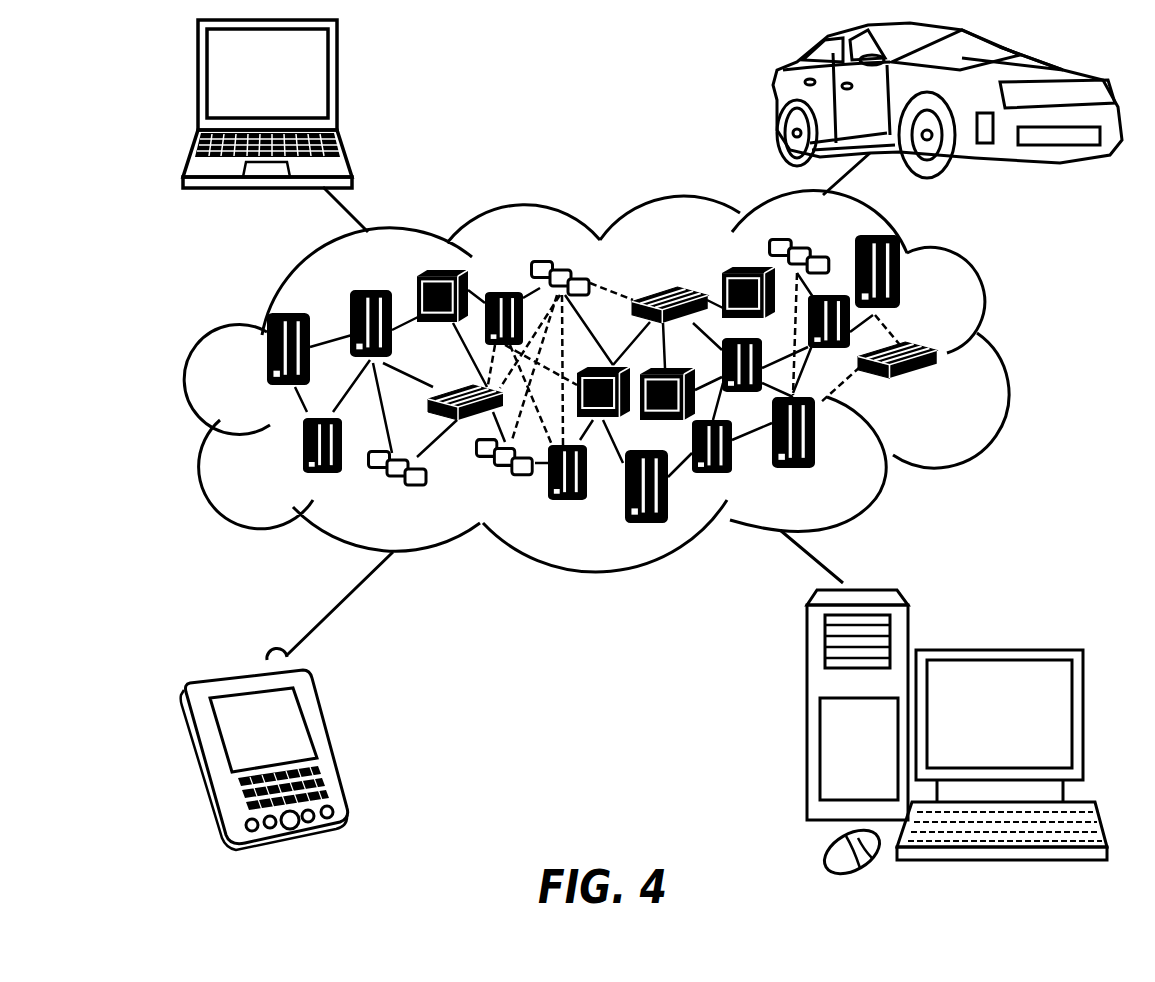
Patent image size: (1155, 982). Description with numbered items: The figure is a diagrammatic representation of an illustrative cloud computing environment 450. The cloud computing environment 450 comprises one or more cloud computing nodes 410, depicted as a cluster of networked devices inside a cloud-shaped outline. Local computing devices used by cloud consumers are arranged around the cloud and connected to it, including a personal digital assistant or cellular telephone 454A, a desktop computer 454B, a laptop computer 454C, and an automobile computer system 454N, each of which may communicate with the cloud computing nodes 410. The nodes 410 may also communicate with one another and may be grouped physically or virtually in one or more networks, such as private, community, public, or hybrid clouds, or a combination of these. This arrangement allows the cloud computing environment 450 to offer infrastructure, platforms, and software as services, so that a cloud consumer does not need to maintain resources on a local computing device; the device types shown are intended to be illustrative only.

The cloud computing nodes 410 is at (950, 390).
The cloud computing environment 450 is at (998, 355).
The personal digital assistant or cellular telephone 454A is at (330, 748).
The desktop computer 454B is at (998, 650).
The laptop computer 454C is at (338, 84).
The automobile computer system 454N is at (778, 98).